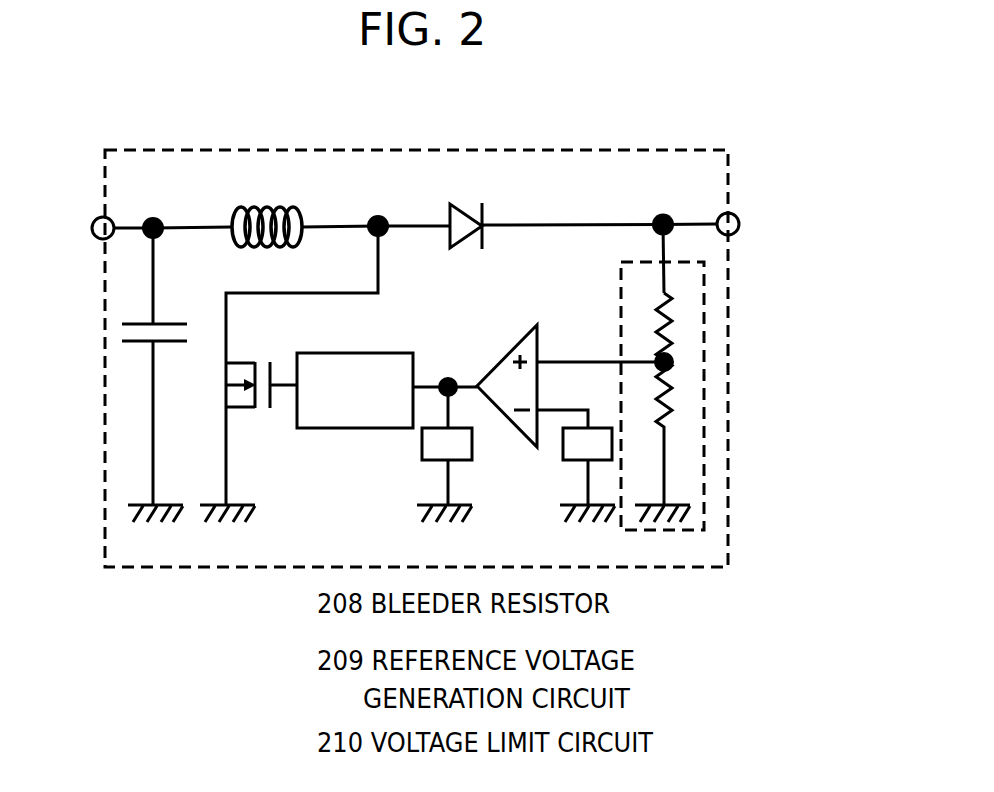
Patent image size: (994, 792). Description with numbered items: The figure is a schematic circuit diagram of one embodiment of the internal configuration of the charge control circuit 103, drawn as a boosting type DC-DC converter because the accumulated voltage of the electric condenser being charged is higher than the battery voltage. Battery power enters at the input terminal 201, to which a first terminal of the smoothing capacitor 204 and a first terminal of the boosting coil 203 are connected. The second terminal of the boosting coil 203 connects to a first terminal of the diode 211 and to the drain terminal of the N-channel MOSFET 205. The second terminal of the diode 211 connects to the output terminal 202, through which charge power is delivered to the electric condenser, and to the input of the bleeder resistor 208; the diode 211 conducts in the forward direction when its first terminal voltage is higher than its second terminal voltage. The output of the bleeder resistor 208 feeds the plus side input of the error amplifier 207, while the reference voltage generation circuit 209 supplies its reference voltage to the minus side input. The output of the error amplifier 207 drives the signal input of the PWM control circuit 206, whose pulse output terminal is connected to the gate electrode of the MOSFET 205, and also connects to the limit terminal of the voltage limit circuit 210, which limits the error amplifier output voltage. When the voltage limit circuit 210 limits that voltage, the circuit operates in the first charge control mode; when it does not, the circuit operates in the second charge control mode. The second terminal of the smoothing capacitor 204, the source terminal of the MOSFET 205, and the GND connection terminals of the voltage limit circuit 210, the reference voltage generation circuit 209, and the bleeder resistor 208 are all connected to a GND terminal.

The charge control circuit 103 is at (402, 150).
The input terminal 201 is at (97, 240).
The output terminal 202 is at (735, 232).
The boosting coil 203 is at (275, 205).
The smoothing capacitor 204 is at (170, 325).
The N-channel MOSFET 205 is at (250, 408).
The PWM control circuit 206 is at (348, 357).
The error amplifier 207 is at (508, 350).
The bleeder resistor 208 is at (620, 307).
The reference voltage generation circuit 209 is at (560, 448).
The voltage limit circuit 210 is at (420, 448).
The diode 211 is at (468, 212).